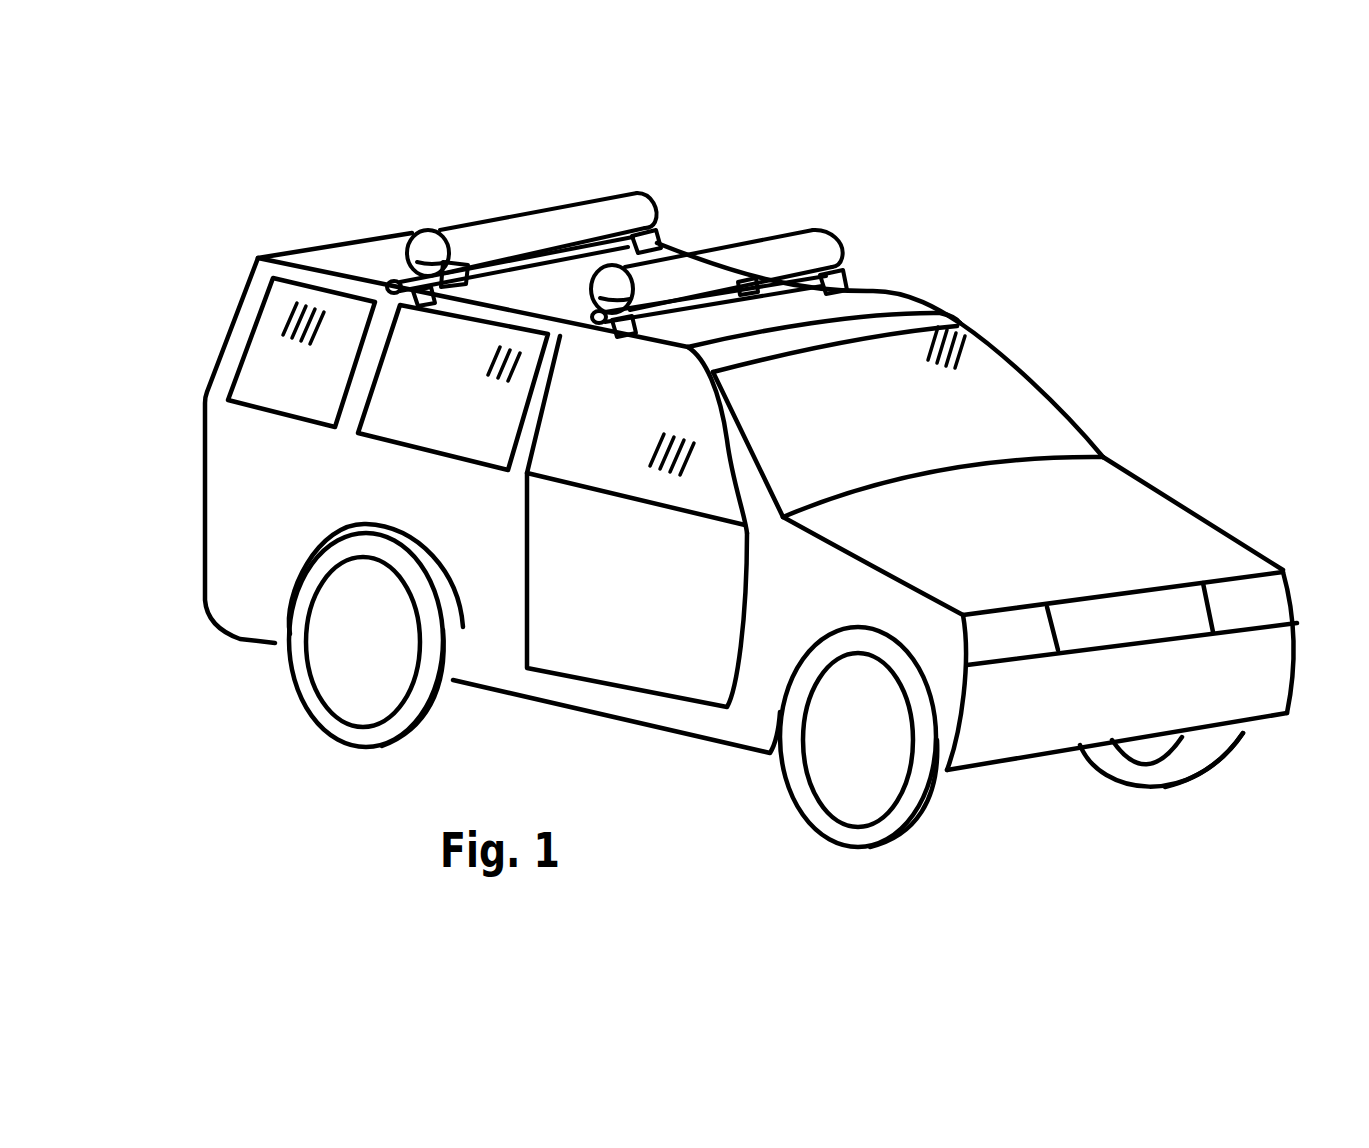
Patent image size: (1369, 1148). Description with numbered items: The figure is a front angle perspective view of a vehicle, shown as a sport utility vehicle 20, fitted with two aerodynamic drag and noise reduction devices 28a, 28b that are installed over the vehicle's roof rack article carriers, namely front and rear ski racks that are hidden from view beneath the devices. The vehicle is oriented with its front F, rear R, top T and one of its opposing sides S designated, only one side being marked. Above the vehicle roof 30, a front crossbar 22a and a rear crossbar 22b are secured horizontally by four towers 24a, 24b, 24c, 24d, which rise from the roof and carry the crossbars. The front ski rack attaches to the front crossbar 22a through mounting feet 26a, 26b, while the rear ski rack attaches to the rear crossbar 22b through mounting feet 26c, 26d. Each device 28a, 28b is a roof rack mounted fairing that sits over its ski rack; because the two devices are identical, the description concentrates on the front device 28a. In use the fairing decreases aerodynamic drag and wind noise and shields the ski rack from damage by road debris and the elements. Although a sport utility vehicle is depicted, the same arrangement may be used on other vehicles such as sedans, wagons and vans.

The sport utility vehicle 20 is at (1157, 273).
The vehicle roof 30 is at (360, 255).
The front crossbar 22a is at (931, 281).
The rear crossbar 22b is at (563, 253).
The tower 24a is at (677, 250).
The tower 24b is at (838, 280).
The tower 24c is at (381, 292).
The tower 24d is at (644, 317).
The mounting foot 26a is at (737, 280).
The mounting foot 26b is at (842, 264).
The mounting foot 26c is at (457, 277).
The mounting foot 26d is at (650, 233).
The aerodynamic drag and noise reduction device 28a is at (810, 228).
The aerodynamic drag and noise reduction device 28b is at (502, 218).
The rear R is at (232, 290).
The side S is at (253, 488).
The front F is at (970, 387).
The top T is at (860, 287).